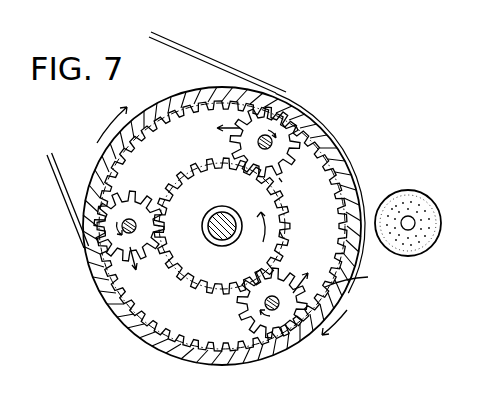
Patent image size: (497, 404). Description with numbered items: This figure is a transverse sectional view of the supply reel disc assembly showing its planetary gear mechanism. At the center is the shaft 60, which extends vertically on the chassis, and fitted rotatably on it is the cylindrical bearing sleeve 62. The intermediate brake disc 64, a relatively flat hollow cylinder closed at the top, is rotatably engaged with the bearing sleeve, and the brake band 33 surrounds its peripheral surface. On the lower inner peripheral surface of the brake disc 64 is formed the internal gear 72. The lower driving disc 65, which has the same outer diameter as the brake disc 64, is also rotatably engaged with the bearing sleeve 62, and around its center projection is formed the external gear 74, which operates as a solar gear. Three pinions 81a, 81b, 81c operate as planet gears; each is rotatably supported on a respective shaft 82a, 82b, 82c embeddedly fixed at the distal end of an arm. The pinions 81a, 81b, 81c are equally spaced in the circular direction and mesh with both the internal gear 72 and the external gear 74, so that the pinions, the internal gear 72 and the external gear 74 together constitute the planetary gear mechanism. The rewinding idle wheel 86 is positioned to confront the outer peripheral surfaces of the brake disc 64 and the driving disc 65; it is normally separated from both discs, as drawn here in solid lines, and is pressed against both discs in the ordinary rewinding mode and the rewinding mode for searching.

The brake band 33 is at (248, 67).
The shaft 60 is at (212, 246).
The cylindrical bearing sleeve 62 is at (211, 209).
The intermediate brake disc 64 is at (296, 348).
The lower driving disc 65 is at (208, 275).
The internal gear 72 is at (355, 288).
The external gear 74 is at (274, 178).
The pinion 81a is at (208, 288).
The pinion 81b is at (279, 178).
The pinion 81c is at (284, 238).
The shaft 82a is at (130, 214).
The shaft 82b is at (243, 143).
The shaft 82c is at (264, 306).
The rewinding idle wheel 86 is at (415, 258).